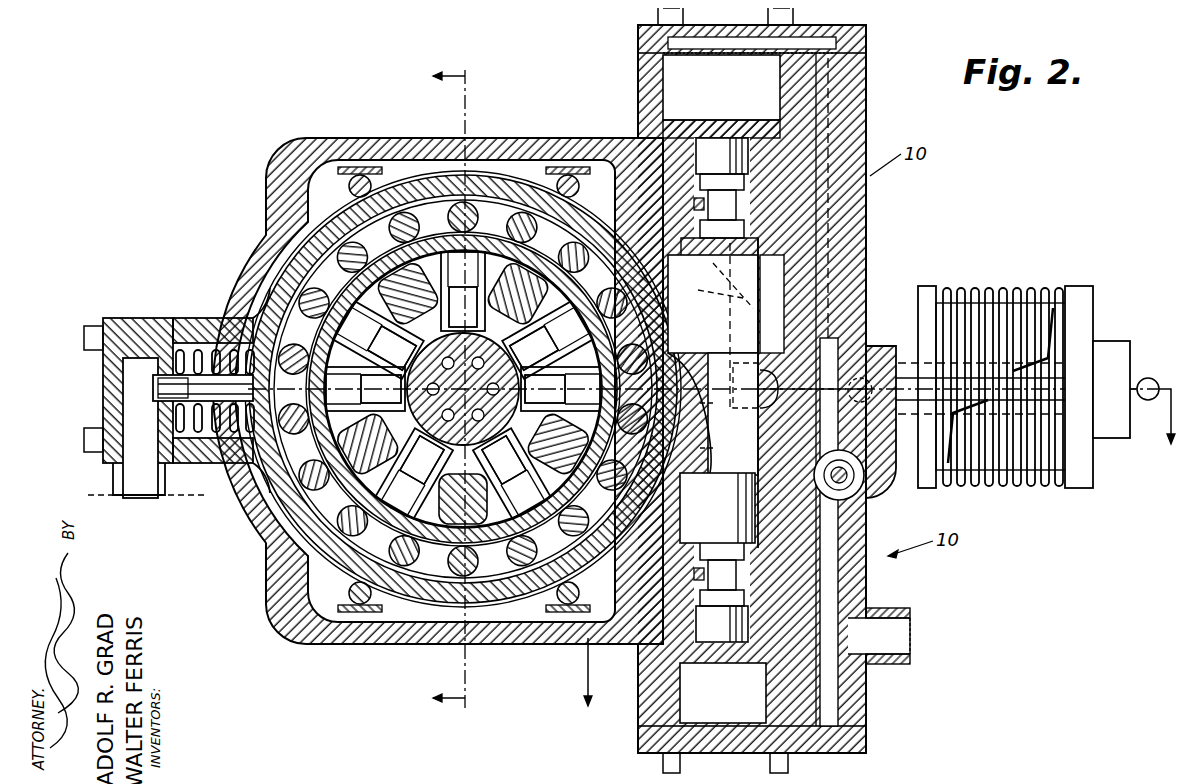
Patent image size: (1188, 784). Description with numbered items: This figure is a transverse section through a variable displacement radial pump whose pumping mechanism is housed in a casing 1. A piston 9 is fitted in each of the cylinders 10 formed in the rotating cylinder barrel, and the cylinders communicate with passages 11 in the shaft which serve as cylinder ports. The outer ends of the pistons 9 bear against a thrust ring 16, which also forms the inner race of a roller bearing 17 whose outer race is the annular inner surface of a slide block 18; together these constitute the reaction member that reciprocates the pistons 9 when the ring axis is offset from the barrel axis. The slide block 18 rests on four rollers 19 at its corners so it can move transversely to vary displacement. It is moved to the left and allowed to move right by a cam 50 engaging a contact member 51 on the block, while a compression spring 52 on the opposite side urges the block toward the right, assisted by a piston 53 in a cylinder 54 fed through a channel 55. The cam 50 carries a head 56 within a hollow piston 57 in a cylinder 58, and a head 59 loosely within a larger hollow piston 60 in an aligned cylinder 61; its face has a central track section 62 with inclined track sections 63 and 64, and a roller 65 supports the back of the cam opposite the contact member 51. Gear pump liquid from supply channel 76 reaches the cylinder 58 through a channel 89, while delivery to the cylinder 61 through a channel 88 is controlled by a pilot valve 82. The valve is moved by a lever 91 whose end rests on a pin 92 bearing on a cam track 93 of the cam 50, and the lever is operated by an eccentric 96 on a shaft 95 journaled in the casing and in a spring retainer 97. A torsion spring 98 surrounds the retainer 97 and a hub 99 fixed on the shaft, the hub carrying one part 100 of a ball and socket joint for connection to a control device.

The casing 1 is at (268, 238).
The piston 9 is at (463, 388).
The cylinder 10 is at (463, 385).
The passage 11 is at (463, 389).
The thrust ring 16 is at (360, 540).
The roller bearing 17 is at (315, 470).
The slide block 18 is at (300, 520).
The roller 19 is at (352, 166).
The cam 50 is at (719, 393).
The contact member 51 is at (698, 340).
The compression spring 52 is at (203, 391).
The piston 53 is at (173, 388).
The cylinder 54 is at (118, 392).
The channel 55 is at (135, 480).
The head 56 is at (722, 592).
The hollow piston 57 is at (748, 655).
The cylinder 58 is at (660, 672).
The head 59 is at (722, 188).
The hollow piston 60 is at (730, 112).
The cylinder 61 is at (665, 78).
The central track section 62 is at (712, 410).
The track section 63 is at (712, 445).
The track section 64 is at (700, 318).
The roller 65 is at (769, 404).
The gear pump supply channel 76 is at (895, 628).
The pilot valve 82 is at (845, 478).
The channel 88 is at (830, 100).
The channel 89 is at (822, 682).
The lever 91 is at (705, 325).
The pin 92 is at (772, 304).
The cam track 93 is at (735, 283).
The shaft 95 is at (815, 390).
The eccentric 96 is at (738, 399).
The spring retainer 97 is at (920, 280).
The torsion spring 98 is at (1015, 280).
The hub 99 is at (1075, 290).
The ball joint part 100 is at (1137, 370).